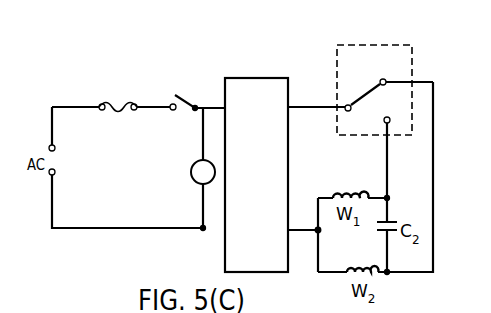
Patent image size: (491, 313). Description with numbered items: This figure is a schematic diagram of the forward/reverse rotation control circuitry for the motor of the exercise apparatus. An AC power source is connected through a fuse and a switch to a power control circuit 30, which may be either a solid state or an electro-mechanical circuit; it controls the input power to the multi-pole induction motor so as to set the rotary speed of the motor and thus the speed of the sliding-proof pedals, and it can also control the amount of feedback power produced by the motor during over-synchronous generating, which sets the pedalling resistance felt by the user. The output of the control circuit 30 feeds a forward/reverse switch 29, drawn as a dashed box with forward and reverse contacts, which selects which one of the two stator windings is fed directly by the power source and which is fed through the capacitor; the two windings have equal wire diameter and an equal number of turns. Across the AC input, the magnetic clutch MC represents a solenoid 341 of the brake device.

The control circuit 30 is at (261, 78).
The forward/reverse switch 29 is at (363, 45).
The solenoid 341 is at (191, 172).